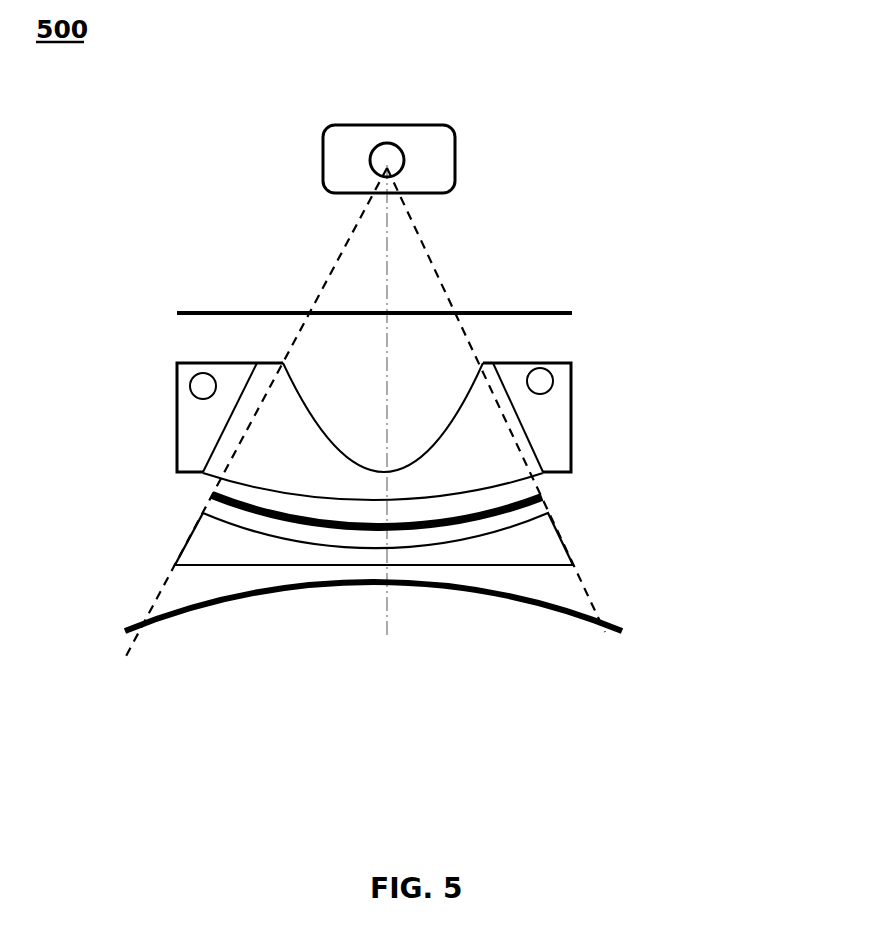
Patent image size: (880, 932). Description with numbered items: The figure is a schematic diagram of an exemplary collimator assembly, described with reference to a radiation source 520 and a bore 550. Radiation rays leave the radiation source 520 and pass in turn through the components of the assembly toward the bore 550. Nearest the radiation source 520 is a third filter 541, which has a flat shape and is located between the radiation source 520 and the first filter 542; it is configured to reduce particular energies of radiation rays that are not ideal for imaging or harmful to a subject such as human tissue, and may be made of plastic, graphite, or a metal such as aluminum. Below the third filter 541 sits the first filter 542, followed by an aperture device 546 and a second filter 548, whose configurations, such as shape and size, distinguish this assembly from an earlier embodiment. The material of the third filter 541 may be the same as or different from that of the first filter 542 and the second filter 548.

The radiation source 520 is at (456, 146).
The third filter 541 is at (547, 313).
The first filter 542 is at (571, 375).
The aperture device 546 is at (547, 498).
The second filter 548 is at (573, 552).
The bore 550 is at (622, 632).